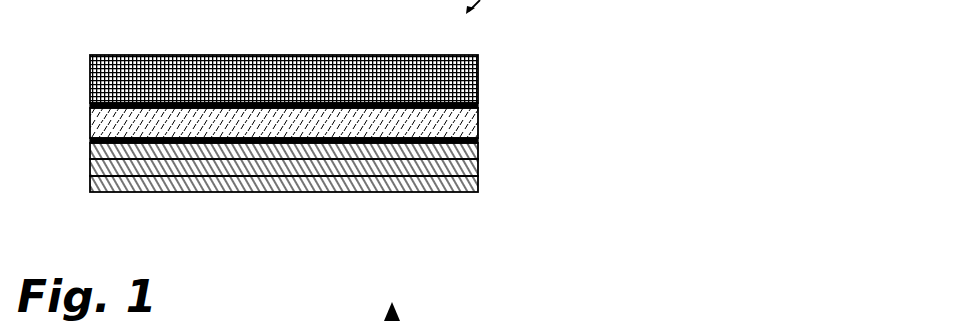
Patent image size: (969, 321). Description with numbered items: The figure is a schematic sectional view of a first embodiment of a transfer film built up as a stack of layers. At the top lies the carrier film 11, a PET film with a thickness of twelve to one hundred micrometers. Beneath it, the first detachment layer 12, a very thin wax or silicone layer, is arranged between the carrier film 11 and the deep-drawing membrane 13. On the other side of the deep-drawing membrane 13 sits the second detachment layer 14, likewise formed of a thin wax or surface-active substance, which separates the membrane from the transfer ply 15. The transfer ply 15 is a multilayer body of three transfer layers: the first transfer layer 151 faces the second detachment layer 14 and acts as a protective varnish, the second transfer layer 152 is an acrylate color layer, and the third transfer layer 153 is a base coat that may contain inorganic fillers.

The carrier film 11 is at (478, 68).
The first detachment layer 12 is at (478, 103).
The deep-drawing membrane 13 is at (478, 120).
The second detachment layer 14 is at (478, 137).
The transfer ply 15 is at (88, 139).
The first transfer layer 151 is at (478, 150).
The second transfer layer 152 is at (478, 168).
The third transfer layer 153 is at (478, 185).